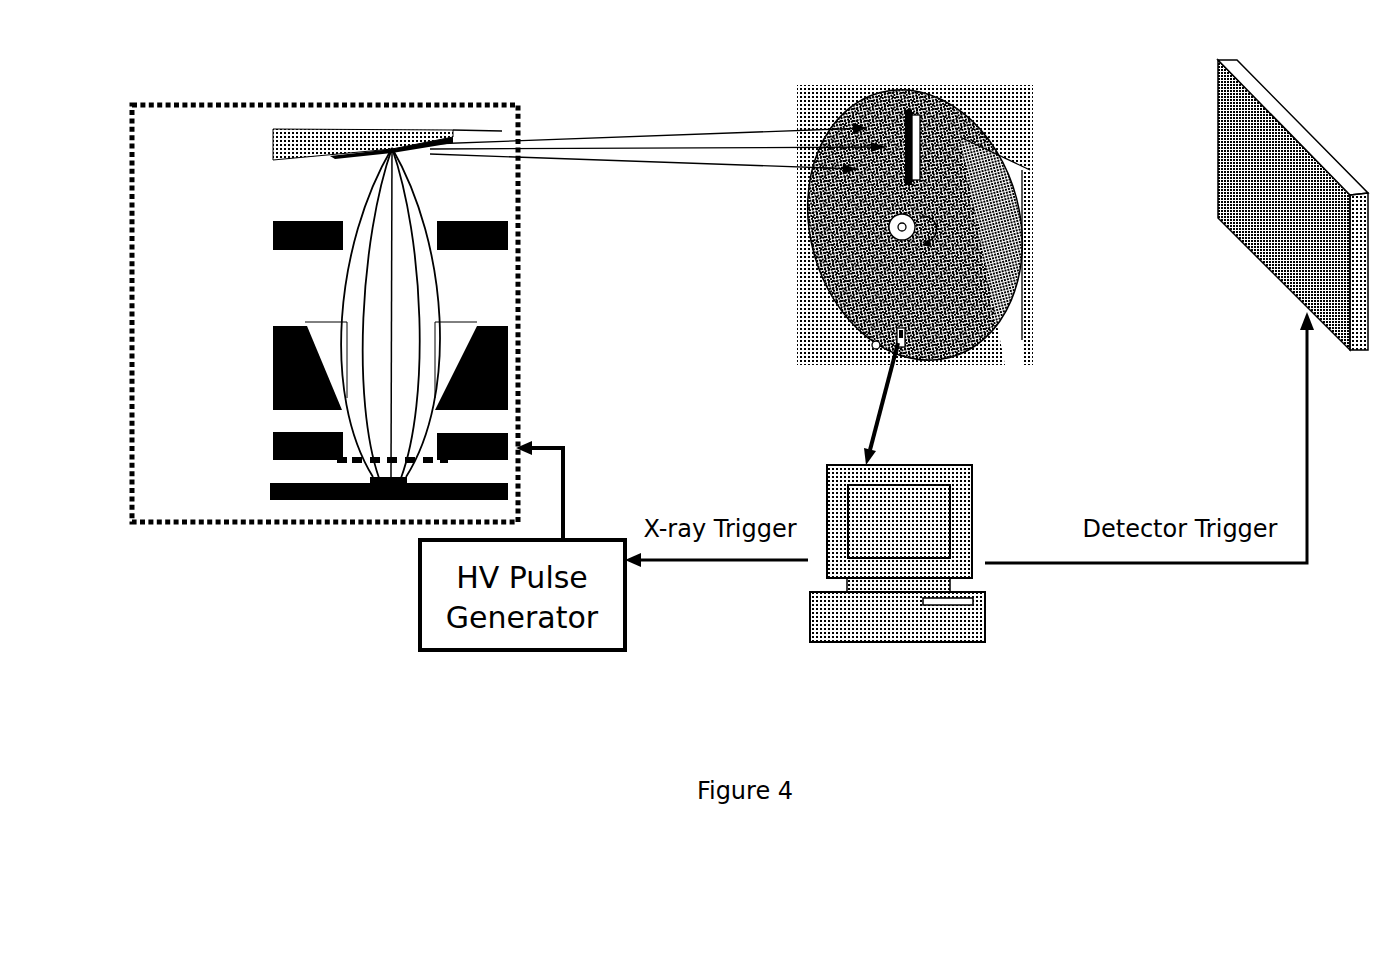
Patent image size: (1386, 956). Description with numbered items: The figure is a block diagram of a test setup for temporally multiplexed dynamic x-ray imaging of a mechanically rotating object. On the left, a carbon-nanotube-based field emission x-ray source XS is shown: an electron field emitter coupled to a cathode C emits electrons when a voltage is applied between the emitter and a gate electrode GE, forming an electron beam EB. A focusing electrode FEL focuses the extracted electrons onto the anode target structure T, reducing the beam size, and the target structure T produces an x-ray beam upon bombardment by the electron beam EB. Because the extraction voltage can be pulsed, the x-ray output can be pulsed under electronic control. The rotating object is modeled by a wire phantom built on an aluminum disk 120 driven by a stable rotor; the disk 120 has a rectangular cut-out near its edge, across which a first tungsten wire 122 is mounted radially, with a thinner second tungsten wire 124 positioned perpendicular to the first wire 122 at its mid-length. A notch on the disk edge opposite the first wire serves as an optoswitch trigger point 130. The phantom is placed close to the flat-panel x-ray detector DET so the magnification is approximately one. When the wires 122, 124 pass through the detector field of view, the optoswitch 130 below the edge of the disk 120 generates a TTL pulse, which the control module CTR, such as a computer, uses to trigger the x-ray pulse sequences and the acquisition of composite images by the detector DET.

The x-ray source XS is at (368, 88).
The anode target structure T is at (273, 149).
The electron beam EB is at (360, 173).
The focusing electrode FEL is at (340, 315).
The gate electrode GE is at (273, 433).
The cathode C is at (290, 485).
The aluminum disk 120 is at (913, 226).
The first tungsten wire 122 is at (905, 188).
The second tungsten wire 124 is at (897, 148).
The optoswitch trigger point 130 is at (901, 340).
The x-ray detector DET is at (1300, 115).
The control module CTR is at (897, 575).